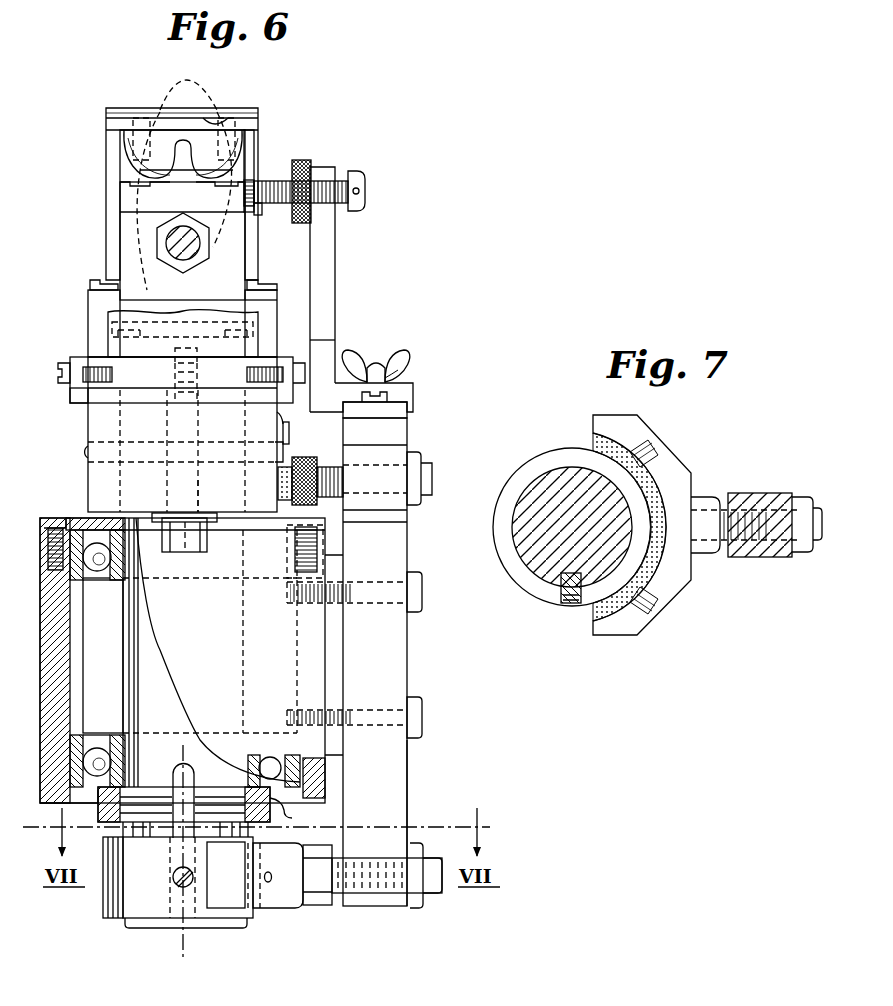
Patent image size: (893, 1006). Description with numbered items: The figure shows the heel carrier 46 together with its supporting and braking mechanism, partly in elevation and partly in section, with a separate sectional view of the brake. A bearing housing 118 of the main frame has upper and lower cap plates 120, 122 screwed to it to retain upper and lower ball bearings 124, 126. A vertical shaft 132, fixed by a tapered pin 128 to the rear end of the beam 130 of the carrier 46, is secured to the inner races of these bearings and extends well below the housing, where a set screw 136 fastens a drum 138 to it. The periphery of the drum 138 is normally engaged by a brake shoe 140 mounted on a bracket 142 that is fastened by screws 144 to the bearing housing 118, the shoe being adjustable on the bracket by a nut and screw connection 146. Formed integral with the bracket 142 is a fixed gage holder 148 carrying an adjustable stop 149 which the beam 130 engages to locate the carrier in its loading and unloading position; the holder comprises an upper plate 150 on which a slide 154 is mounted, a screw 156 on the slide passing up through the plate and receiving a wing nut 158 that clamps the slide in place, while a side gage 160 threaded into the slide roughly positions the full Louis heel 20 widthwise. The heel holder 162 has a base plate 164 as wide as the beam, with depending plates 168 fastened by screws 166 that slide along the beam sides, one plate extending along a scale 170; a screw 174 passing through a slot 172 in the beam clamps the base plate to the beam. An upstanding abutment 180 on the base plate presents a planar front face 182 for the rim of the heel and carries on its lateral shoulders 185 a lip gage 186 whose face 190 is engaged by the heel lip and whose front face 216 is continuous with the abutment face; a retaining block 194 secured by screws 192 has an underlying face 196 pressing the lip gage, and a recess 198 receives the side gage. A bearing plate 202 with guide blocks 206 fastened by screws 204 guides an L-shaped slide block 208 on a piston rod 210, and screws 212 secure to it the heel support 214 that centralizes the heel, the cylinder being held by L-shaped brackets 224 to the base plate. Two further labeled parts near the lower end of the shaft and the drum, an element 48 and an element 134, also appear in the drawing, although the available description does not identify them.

In FIG. 6, the full Louis heel 20 is at (135, 168).
In FIG. 6, the heel carrier 46 is at (66, 351).
In FIG. 6, the slot 48 is at (182, 943).
In FIG. 6, the bearing housing 118 is at (62, 605).
In FIG. 6, the upper cap plate 120 is at (95, 535).
In FIG. 6, the lower cap plate 122 is at (78, 798).
In FIG. 6, the upper ball bearing 124 is at (101, 590).
In FIG. 6, the lower ball bearing 126 is at (98, 728).
In FIG. 6, the tapered pin 128 is at (147, 445).
In FIG. 6, the beam 130 is at (87, 432).
In FIG. 6, the vertical shaft 132 is at (118, 478).
In FIG. 7, the vertical shaft 132 is at (568, 472).
In FIG. 6, the collar 134 is at (270, 803).
In FIG. 6, the set screw 136 is at (176, 873).
In FIG. 7, the set screw 136 is at (565, 600).
In FIG. 6, the drum 138 is at (103, 903).
In FIG. 7, the drum 138 is at (522, 588).
In FIG. 6, the brake shoe 140 is at (227, 893).
In FIG. 7, the brake shoe 140 is at (618, 415).
In FIG. 6, the bracket 142 is at (407, 770).
In FIG. 7, the bracket 142 is at (747, 496).
In FIG. 6, the screws 144 is at (363, 600).
In FIG. 6, the nut and screw connection 146 is at (415, 900).
In FIG. 7, the nut and screw connection 146 is at (800, 555).
In FIG. 6, the fixed gage holder 148 is at (407, 433).
In FIG. 6, the stop 149 is at (297, 506).
In FIG. 6, the upper plate 150 is at (393, 410).
In FIG. 6, the slide 154 is at (413, 390).
In FIG. 6, the screw 156 is at (374, 360).
In FIG. 6, the wing nut 158 is at (393, 375).
In FIG. 6, the side gage 160 is at (260, 170).
In FIG. 6, the heel holder 162 is at (100, 215).
In FIG. 6, the base plate 164 is at (100, 362).
In FIG. 6, the screws 166 is at (63, 392).
In FIG. 6, the depending plates 168 is at (313, 340).
In FIG. 6, the scale 170 is at (311, 430).
In FIG. 6, the slot 172 is at (193, 472).
In FIG. 6, the screw 174 is at (177, 545).
In FIG. 6, the abutment 180 is at (107, 230).
In FIG. 6, the planar front face 182 is at (113, 253).
In FIG. 6, the lateral shoulders 185 is at (258, 148).
In FIG. 6, the lip gage 186 is at (110, 152).
In FIG. 6, the face 190 is at (119, 129).
In FIG. 6, the screws 192 is at (160, 106).
In FIG. 6, the retaining block 194 is at (190, 116).
In FIG. 6, the underlying face 196 is at (206, 120).
In FIG. 6, the recess 198 is at (260, 212).
In FIG. 6, the bearing plate 202 is at (311, 312).
In FIG. 6, the screws 204 is at (284, 268).
In FIG. 6, the guide blocks 206 is at (273, 298).
In FIG. 6, the slide block 208 is at (185, 305).
In FIG. 6, the piston rod 210 is at (198, 250).
In FIG. 6, the screws 212 is at (150, 194).
In FIG. 6, the heel support 214 is at (145, 215).
In FIG. 6, the front face 216 is at (250, 142).
In FIG. 6, the L-shaped brackets 224 is at (210, 350).